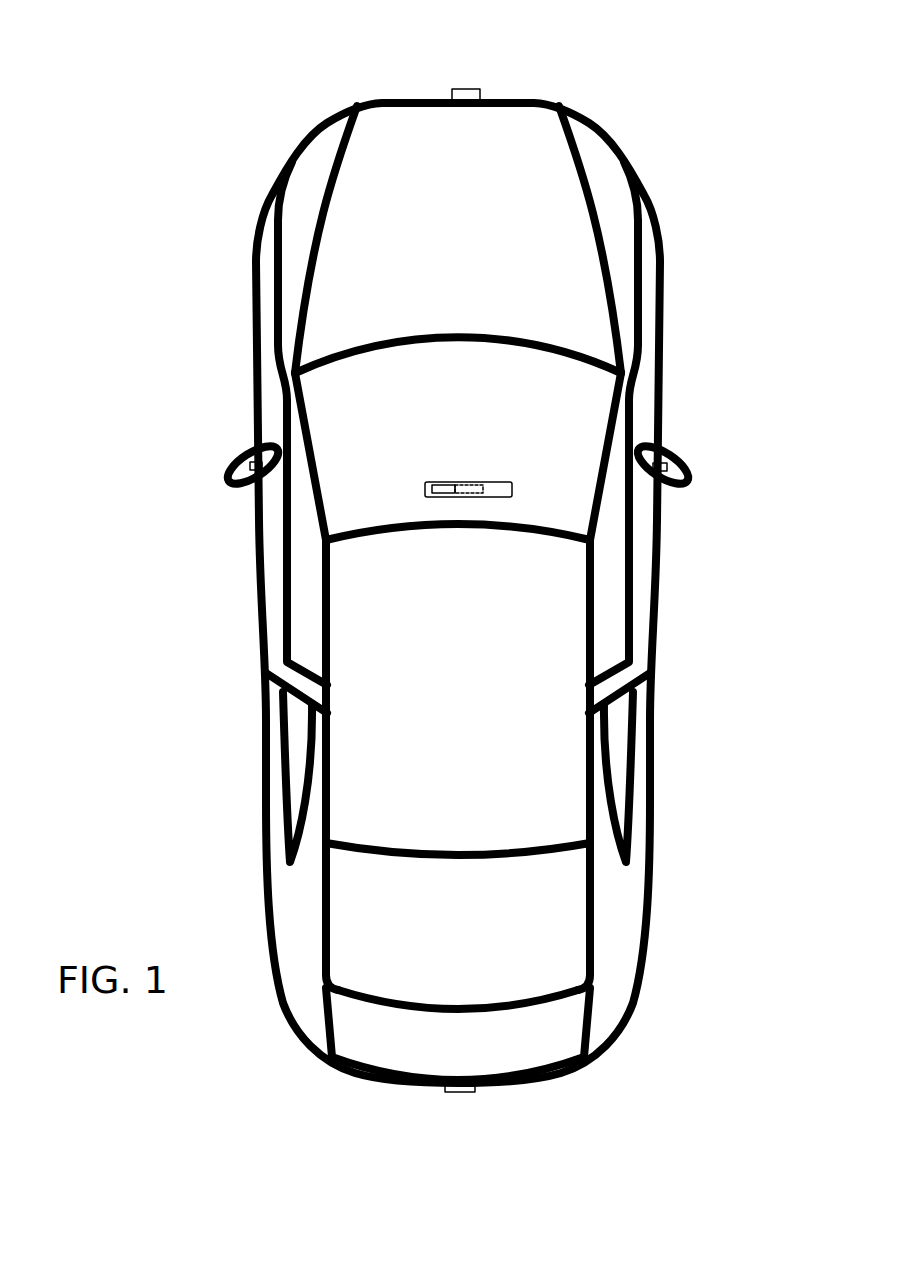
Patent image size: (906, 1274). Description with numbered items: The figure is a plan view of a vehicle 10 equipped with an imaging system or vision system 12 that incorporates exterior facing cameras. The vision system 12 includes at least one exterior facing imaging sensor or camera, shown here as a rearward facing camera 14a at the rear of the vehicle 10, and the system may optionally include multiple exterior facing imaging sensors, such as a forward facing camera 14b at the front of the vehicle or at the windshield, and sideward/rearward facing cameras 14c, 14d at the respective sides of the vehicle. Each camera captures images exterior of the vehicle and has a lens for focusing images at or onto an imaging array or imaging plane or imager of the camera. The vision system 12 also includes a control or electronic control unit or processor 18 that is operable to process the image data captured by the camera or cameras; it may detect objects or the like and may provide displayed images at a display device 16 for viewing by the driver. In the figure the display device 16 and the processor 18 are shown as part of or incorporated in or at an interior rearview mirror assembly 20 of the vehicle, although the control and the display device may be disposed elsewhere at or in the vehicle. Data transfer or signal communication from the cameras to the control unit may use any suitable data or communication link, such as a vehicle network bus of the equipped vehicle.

The vehicle 10 is at (208, 190).
The vision system 12 is at (408, 1114).
The rearward facing camera 14a is at (463, 1088).
The forward facing camera 14b is at (470, 88).
The sideward/rearward facing camera 14c is at (243, 460).
The sideward/rearward facing camera 14d is at (675, 462).
The display device 16 is at (443, 485).
The processor 18 is at (463, 483).
The interior rearview mirror assembly 20 is at (512, 482).